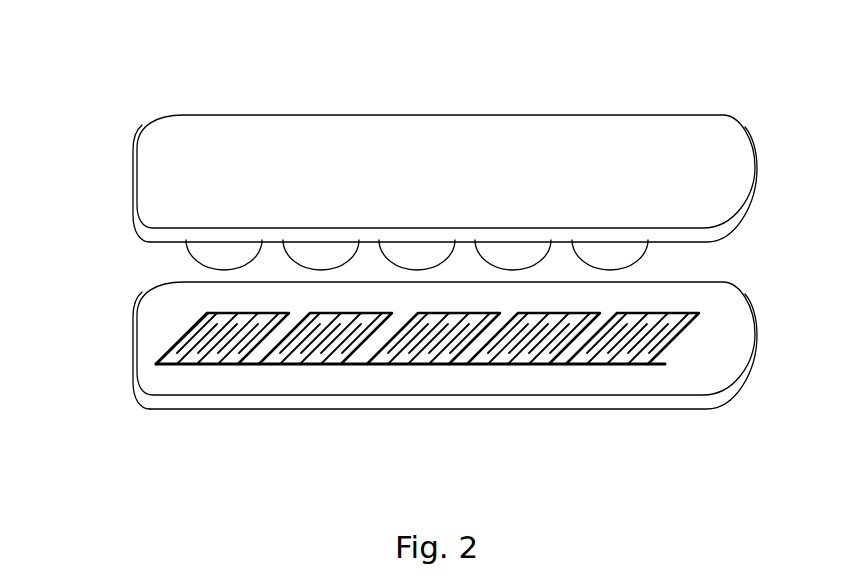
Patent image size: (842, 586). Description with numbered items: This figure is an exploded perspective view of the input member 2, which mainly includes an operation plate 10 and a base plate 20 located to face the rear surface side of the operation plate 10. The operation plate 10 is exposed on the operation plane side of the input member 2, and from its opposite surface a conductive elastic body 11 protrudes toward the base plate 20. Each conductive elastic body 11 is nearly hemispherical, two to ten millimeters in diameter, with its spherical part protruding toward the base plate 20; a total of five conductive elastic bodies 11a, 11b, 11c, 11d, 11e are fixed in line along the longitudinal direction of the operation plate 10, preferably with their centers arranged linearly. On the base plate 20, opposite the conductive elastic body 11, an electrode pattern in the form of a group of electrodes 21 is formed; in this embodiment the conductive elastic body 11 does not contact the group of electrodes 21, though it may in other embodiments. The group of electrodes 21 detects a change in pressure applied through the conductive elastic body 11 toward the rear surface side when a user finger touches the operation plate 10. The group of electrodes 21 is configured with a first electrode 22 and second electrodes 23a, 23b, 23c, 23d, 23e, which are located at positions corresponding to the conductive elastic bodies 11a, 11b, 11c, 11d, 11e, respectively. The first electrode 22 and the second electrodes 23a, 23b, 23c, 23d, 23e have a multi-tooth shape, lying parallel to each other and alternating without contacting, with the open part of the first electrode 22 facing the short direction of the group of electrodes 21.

The input member 2 is at (731, 82).
The operation plate 10 is at (160, 178).
The conductive elastic body 11 is at (425, 167).
The conductive elastic body 11a is at (222, 252).
The conductive elastic body 11b is at (319, 252).
The conductive elastic body 11c is at (415, 252).
The conductive elastic body 11d is at (511, 252).
The conductive elastic body 11e is at (608, 252).
The base plate 20 is at (167, 332).
The group of electrodes 21 is at (430, 390).
The first electrode 22 is at (210, 362).
The second electrode 23a is at (253, 316).
The second electrode 23b is at (340, 316).
The second electrode 23c is at (448, 316).
The second electrode 23d is at (563, 316).
The second electrode 23e is at (666, 316).